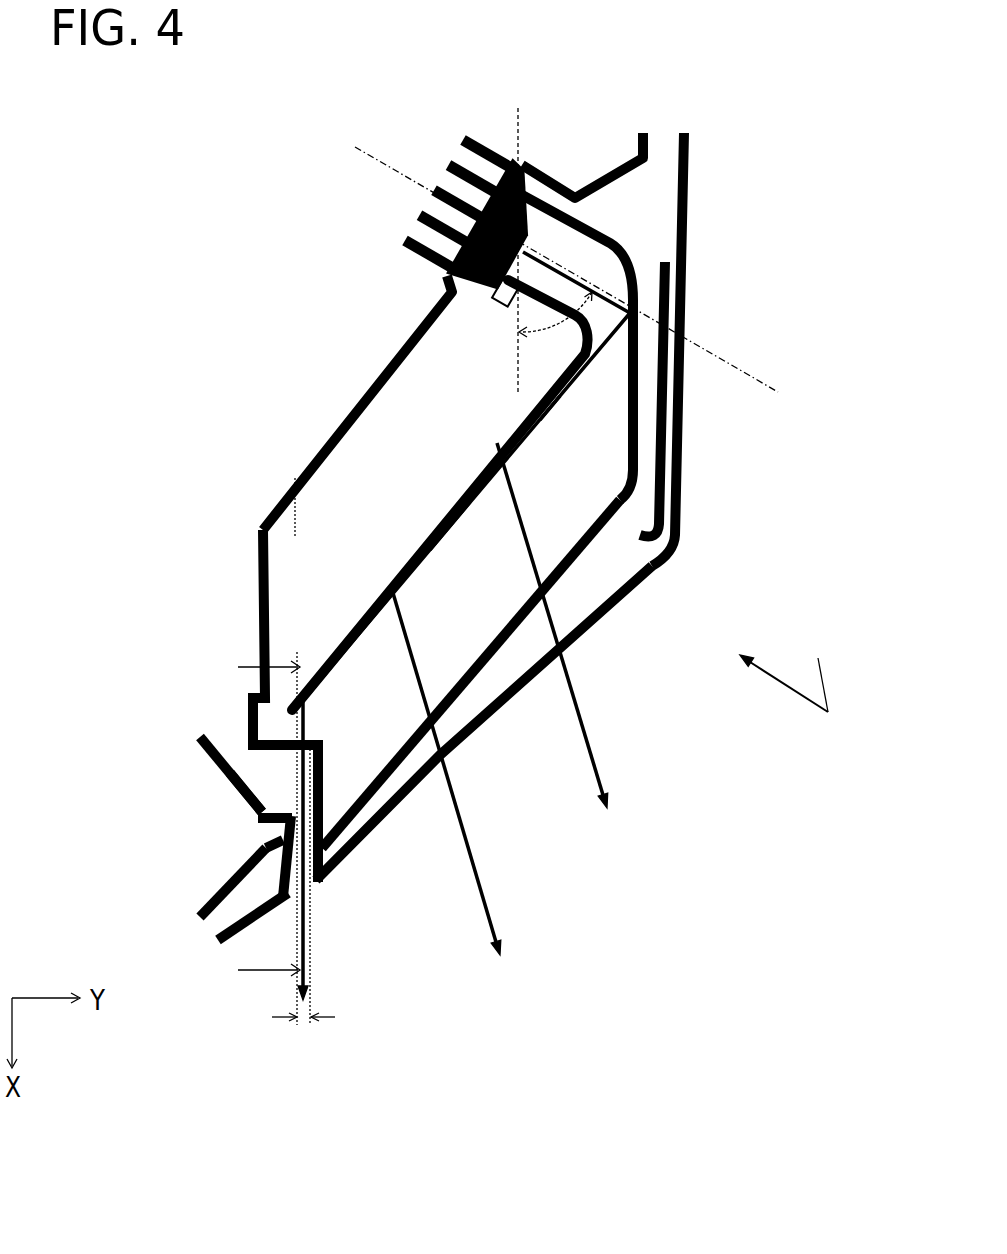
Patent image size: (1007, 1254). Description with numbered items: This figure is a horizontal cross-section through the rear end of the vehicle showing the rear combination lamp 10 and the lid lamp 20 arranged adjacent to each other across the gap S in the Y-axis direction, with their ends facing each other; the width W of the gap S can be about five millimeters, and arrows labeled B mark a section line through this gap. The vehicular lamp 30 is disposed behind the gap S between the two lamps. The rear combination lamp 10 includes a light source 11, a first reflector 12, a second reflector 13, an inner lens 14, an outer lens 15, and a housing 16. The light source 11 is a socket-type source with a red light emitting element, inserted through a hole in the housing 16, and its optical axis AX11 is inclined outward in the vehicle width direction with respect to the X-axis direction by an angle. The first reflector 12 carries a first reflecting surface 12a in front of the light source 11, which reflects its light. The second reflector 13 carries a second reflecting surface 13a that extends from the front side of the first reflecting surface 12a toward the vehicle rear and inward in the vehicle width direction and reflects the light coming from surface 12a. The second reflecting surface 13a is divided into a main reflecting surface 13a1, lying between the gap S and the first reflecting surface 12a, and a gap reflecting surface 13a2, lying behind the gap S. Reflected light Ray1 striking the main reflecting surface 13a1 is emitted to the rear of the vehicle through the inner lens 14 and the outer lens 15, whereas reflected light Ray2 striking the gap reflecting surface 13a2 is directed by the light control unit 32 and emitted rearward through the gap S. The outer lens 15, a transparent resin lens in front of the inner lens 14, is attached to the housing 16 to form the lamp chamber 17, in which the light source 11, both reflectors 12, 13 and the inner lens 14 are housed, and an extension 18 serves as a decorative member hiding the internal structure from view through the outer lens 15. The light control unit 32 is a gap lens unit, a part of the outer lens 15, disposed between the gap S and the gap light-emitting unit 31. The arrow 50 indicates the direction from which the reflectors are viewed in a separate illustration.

The rear combination lamp 10 is at (503, 84).
The light source 11 is at (528, 238).
The first reflector 12 is at (615, 242).
The first reflecting surface 12a is at (628, 264).
The second reflector 13 is at (510, 430).
The second reflecting surface 13a is at (447, 527).
The main reflecting surface 13a1 is at (333, 682).
The gap reflecting surface 13a2 is at (308, 690).
The inner lens 14 is at (460, 673).
The outer lens 15 is at (510, 712).
The housing 16 is at (378, 382).
The lamp chamber 17 is at (389, 510).
The extension 18 is at (680, 478).
The lid lamp 20 is at (176, 793).
The vehicular lamp 30 is at (230, 722).
The gap light-emitting unit 31 is at (258, 803).
The light control unit 32 is at (247, 818).
The arrow 50 is at (790, 669).
The optical axis AX11 is at (583, 250).
The reflected light Ray1 is at (592, 752).
The reflected light Ray2 is at (310, 965).
The gap S is at (310, 895).
The width W is at (303, 1041).
The section line B- B is at (259, 822).